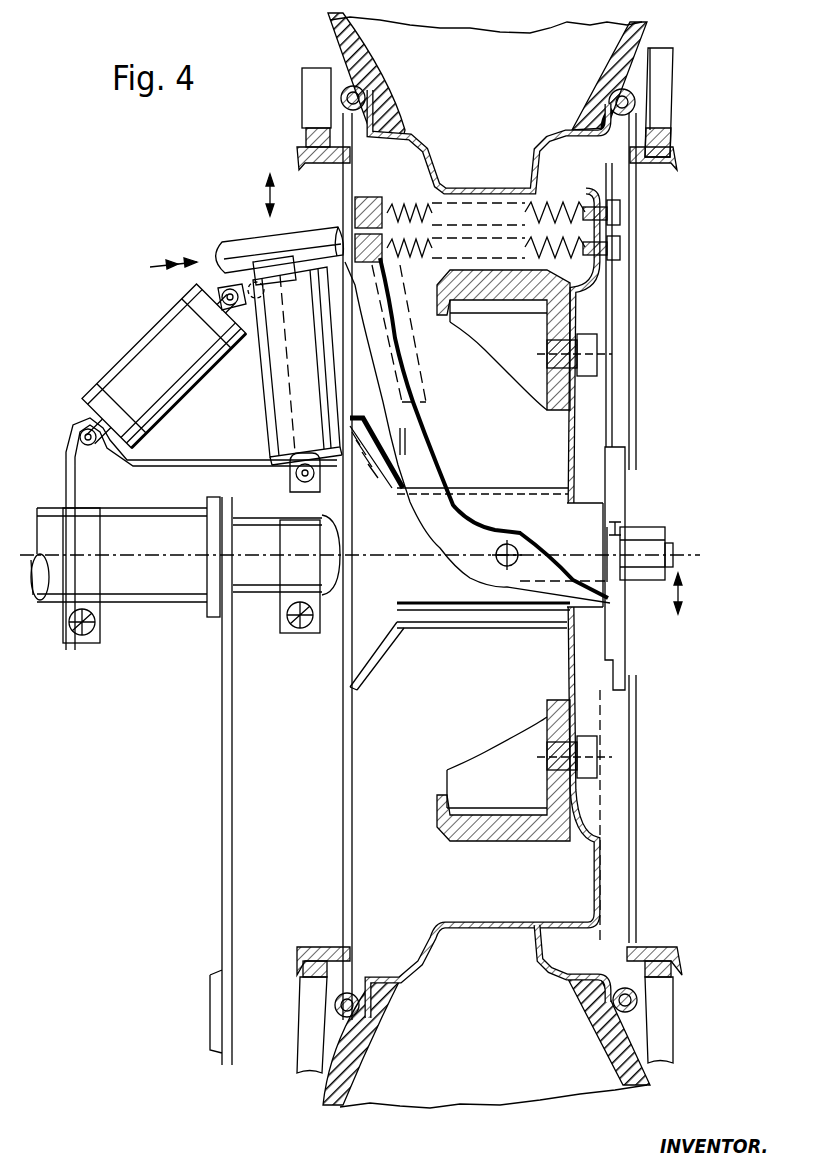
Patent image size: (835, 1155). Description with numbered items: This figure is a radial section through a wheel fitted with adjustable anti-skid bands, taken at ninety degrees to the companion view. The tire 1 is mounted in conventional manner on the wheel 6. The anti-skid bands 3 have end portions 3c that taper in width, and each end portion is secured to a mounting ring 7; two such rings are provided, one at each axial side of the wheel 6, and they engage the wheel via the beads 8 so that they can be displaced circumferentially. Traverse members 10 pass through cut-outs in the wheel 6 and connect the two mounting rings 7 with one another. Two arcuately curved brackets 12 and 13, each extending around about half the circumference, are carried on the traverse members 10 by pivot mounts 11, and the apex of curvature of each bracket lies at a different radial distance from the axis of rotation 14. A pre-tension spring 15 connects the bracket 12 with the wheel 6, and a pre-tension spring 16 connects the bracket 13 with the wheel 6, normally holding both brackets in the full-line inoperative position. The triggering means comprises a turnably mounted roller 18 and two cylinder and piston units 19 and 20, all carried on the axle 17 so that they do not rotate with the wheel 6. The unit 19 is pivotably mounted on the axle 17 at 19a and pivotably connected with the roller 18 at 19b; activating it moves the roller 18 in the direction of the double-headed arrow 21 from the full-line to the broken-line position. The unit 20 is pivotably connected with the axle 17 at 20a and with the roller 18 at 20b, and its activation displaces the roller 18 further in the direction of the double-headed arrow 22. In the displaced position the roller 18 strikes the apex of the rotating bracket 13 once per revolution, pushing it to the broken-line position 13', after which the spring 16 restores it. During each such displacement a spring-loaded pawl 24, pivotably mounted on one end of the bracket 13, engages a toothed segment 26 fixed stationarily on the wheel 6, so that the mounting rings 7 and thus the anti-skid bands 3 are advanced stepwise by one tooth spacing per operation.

The tire 1 is at (328, 20).
The anti-skid bands 3 is at (317, 1028).
The end portions of the anti-skid bands 3c is at (662, 63).
The wheel 6 is at (437, 165).
The mounting ring 7 is at (300, 155).
The beads 8 is at (331, 97).
The traverse members 10 is at (390, 645).
The pivot mounts 11 is at (505, 566).
The bracket 12 is at (355, 207).
The bracket 13 is at (477, 430).
The broken-line position of the bracket 13' is at (418, 333).
The axis of rotation 14 is at (42, 602).
The pre-tension spring 15 is at (617, 228).
The pre-tension spring 16 is at (600, 258).
The axle 17 is at (151, 583).
The roller 18 is at (212, 252).
The cylinder and piston unit 19 is at (153, 357).
The pivotable mounting of unit 19 19a is at (87, 418).
The pivotable connection of unit 19 with the roller 19b is at (222, 299).
The cylinder and piston unit 20 is at (287, 403).
The pivotable connection of unit 20 with the axle 20a is at (300, 482).
The pivotable connection of unit 20 with the roller 20b is at (253, 262).
The double-headed arrow 21 is at (153, 268).
The double-headed arrow 22 is at (247, 194).
The pawl 24 is at (613, 592).
The toothed segment 26 is at (612, 483).